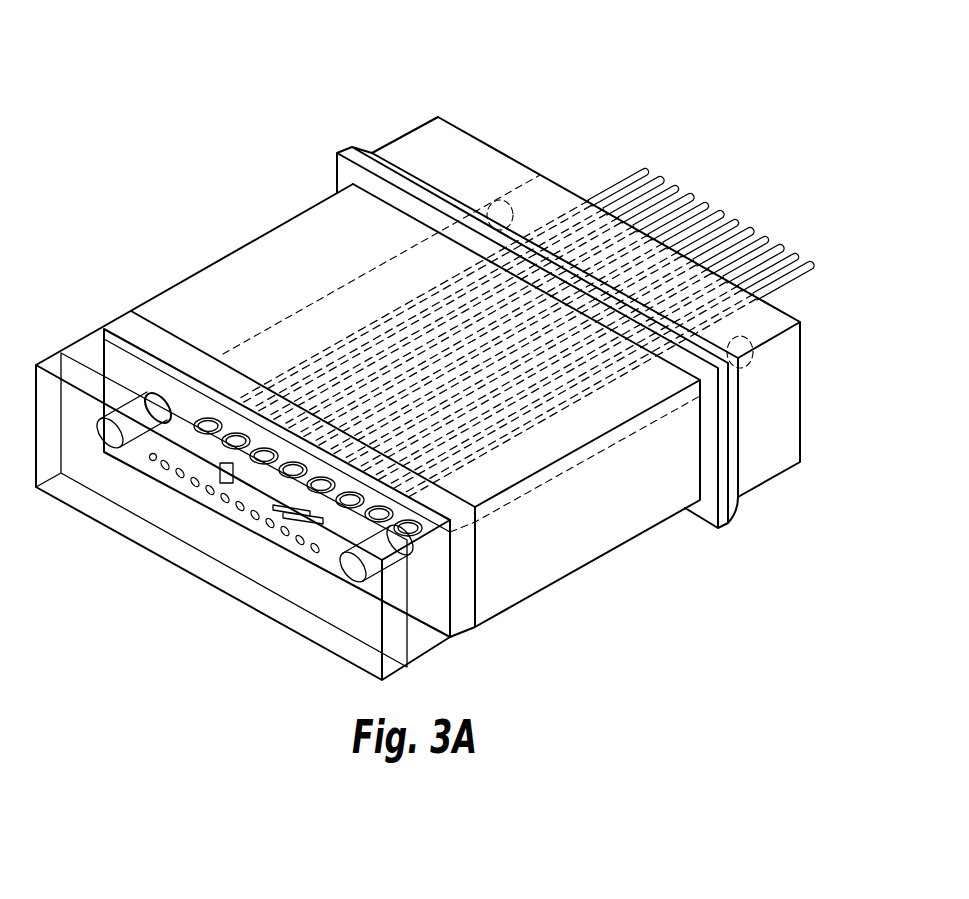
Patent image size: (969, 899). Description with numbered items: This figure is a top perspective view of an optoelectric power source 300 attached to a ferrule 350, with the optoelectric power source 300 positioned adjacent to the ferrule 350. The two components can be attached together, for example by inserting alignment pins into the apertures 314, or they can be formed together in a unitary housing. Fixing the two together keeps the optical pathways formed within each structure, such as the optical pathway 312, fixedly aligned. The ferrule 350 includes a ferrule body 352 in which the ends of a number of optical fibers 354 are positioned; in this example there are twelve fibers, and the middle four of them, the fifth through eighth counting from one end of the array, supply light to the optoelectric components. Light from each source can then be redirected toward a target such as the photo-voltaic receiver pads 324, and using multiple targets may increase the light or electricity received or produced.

The optoelectric power source 300 is at (60, 319).
The optical pathway 312 is at (151, 460).
The apertures 314 is at (349, 575).
The photo-voltaic receiver pads 324 is at (208, 432).
The ferrule 350 is at (165, 90).
The ferrule body 352 is at (231, 258).
The optical fibers 354 is at (626, 185).